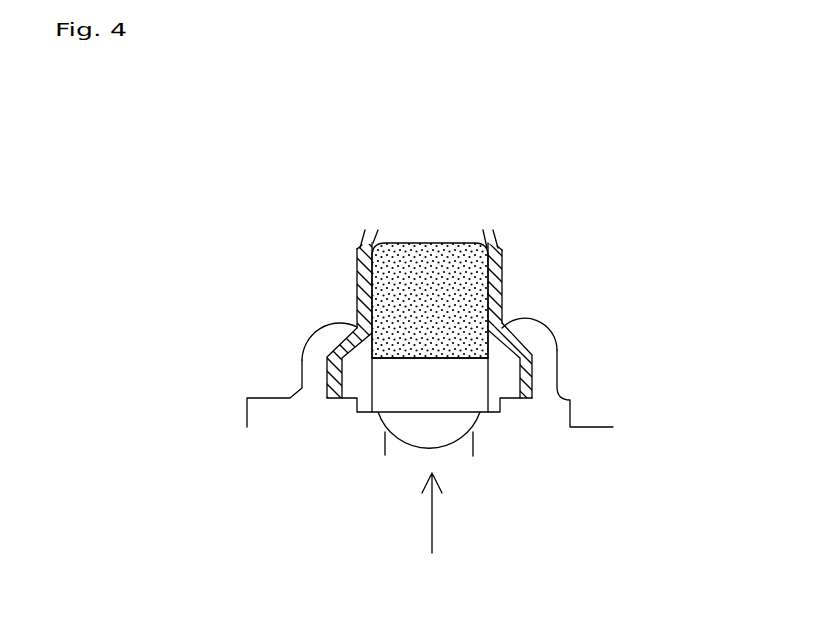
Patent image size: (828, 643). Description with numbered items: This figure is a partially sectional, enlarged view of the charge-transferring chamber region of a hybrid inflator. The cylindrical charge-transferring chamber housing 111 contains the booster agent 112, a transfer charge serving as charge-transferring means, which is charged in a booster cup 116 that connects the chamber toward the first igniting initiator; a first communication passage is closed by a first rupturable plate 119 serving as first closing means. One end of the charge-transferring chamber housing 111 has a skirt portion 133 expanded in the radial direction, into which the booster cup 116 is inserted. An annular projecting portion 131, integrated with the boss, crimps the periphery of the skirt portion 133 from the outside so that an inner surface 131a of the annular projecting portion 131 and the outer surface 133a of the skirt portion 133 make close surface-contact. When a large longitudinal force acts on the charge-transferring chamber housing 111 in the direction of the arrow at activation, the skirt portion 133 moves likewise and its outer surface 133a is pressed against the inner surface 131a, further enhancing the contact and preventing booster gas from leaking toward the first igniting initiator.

The charge-transferring chamber housing 111 is at (500, 258).
The booster agent 112 is at (425, 256).
The booster cup 116 is at (409, 372).
The first rupturable plate 119 is at (453, 445).
The annular projecting portion 131 is at (330, 336).
The inner surface of the annular projecting portion 131a is at (327, 356).
The skirt portion 133 is at (532, 368).
The outer surface of the skirt portion 133a is at (522, 354).